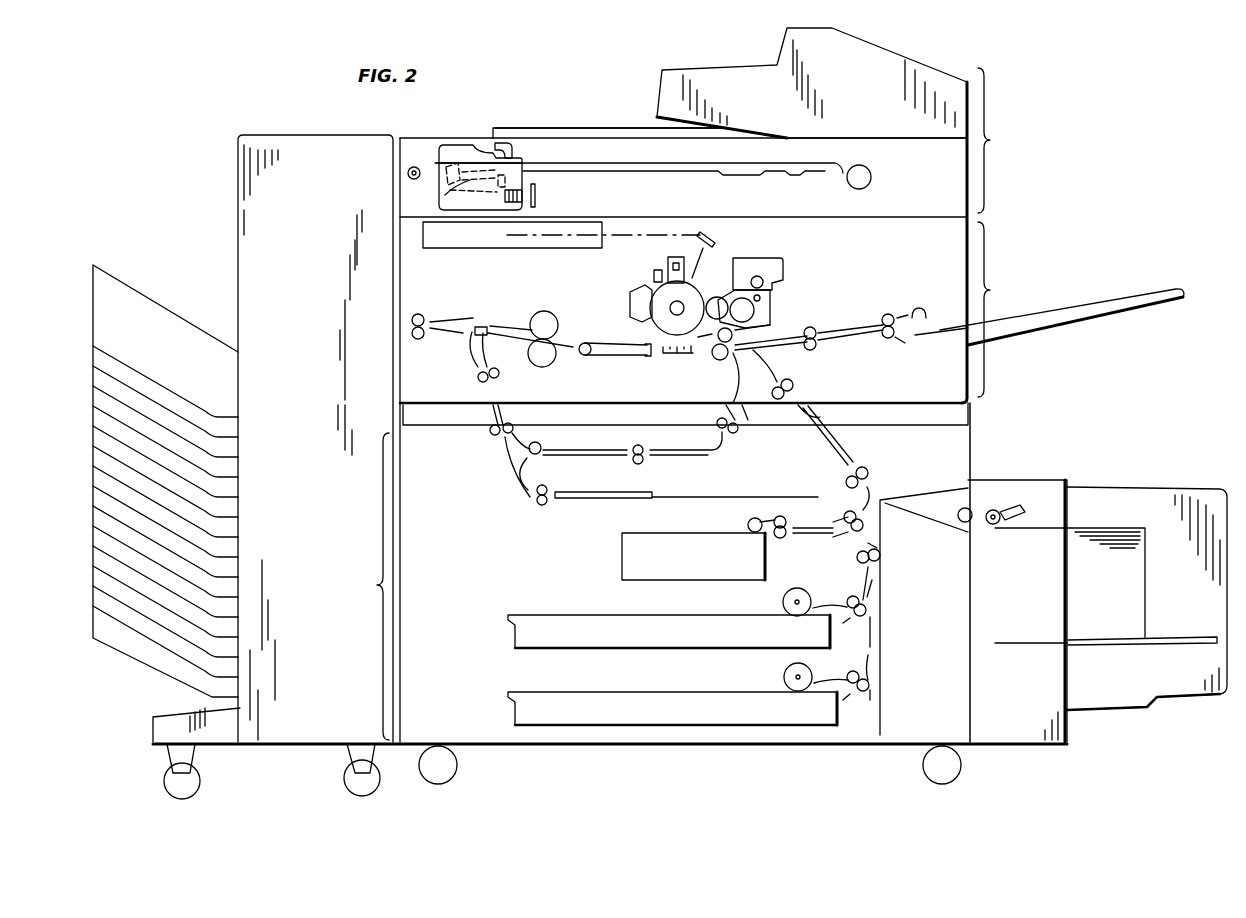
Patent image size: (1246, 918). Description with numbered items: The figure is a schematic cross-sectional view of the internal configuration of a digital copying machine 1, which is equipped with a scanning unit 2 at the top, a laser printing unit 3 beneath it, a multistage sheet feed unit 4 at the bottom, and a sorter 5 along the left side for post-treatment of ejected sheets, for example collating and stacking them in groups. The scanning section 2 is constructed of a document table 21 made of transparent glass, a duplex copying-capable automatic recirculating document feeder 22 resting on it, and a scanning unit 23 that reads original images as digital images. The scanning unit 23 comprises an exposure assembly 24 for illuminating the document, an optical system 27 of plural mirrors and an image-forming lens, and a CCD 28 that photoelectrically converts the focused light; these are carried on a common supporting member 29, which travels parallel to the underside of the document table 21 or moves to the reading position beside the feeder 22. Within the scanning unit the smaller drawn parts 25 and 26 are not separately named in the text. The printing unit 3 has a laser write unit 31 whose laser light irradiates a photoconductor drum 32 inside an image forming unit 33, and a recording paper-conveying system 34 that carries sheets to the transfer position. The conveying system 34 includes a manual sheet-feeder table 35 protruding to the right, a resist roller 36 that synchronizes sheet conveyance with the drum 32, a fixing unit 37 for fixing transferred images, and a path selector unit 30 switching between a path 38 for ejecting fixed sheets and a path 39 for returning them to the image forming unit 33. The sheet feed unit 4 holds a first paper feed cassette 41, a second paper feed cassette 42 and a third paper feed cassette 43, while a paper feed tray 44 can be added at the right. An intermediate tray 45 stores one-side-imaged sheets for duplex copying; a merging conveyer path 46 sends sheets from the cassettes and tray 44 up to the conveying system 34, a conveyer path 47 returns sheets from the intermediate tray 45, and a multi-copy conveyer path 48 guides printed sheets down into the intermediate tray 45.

The digital copying machine 1 is at (1030, 98).
The scanning unit 2 is at (991, 140).
The laser printing unit 3 is at (991, 309).
The multistage sheet feed unit 4 is at (370, 586).
The sorter 5 is at (330, 138).
The document table 21 is at (582, 128).
The automatic recirculating document feeder (RDH) 22 is at (723, 69).
The scanning unit 23 is at (410, 184).
The exposure assembly 24 is at (511, 152).
The scanning carriage 25 is at (437, 165).
The image sensor 26 is at (523, 207).
The optical system 27 is at (424, 198).
The CCD 28 is at (537, 189).
The supporting member 29 is at (462, 146).
The path selector unit 30 is at (483, 327).
The laser write unit 31 is at (585, 227).
The photoconductor drum 32 is at (697, 283).
The image forming unit 33 is at (842, 275).
The recording paper-conveying system 34 is at (740, 369).
The manual sheet-feeder table 35 is at (1088, 286).
The resist roller 36 is at (751, 318).
The fixing unit 37 is at (539, 322).
The path 38 is at (444, 320).
The path 39 is at (472, 362).
The first paper feed cassette 41 is at (628, 553).
The second paper feed cassette 42 is at (536, 627).
The third paper feed cassette 43 is at (523, 698).
The paper feed tray 44 is at (1018, 480).
The intermediate tray 45 is at (577, 500).
The merging conveyer path 46 is at (846, 440).
The conveyer path 47 is at (673, 457).
The multi-copy conveyer path 48 is at (502, 455).